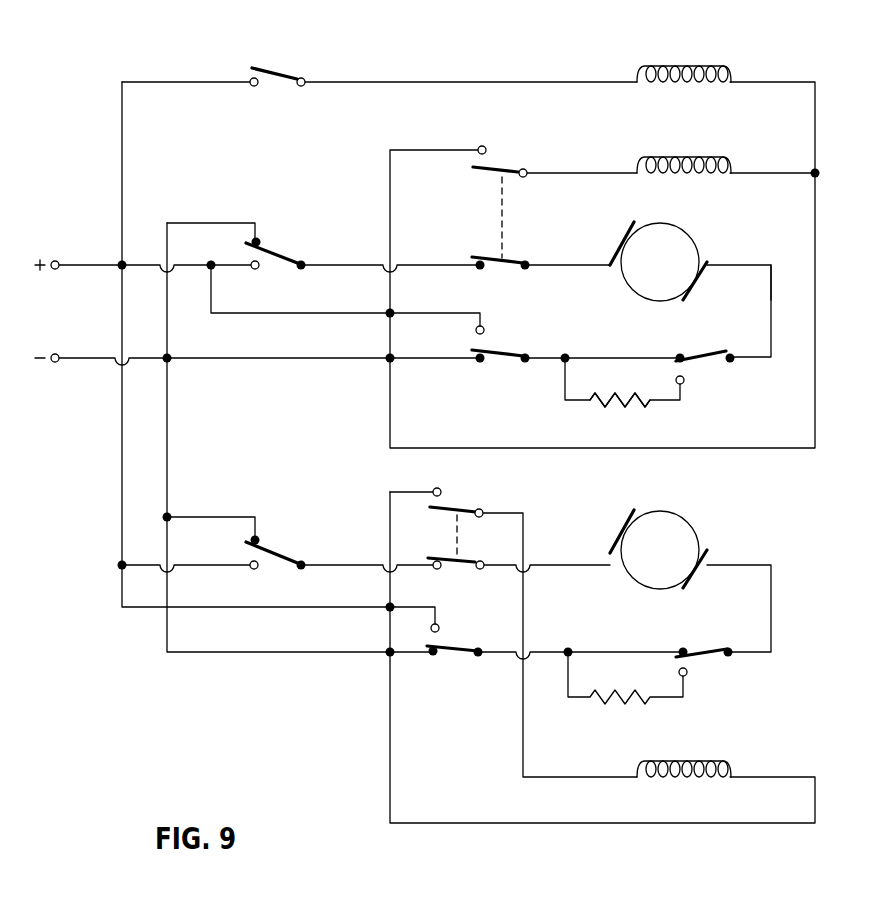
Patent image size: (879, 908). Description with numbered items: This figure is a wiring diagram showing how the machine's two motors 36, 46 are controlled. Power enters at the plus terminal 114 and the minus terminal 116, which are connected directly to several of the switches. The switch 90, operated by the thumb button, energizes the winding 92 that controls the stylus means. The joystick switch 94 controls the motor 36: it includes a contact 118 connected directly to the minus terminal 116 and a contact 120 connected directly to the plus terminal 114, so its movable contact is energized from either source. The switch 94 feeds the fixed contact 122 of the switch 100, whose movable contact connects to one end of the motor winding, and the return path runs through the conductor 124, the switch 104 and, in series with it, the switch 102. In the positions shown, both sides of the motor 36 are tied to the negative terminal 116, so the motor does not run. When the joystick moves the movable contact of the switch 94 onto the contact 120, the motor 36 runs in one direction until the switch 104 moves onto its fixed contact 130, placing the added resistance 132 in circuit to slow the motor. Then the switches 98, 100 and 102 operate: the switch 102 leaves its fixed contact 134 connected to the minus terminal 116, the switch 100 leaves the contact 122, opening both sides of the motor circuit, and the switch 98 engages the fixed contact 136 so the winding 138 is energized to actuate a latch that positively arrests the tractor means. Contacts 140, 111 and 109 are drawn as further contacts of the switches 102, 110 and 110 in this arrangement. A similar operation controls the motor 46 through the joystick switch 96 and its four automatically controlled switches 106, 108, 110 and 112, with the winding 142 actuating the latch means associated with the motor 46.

The plus terminal 114 is at (57, 262).
The minus terminal 116 is at (57, 354).
The switch 90 is at (270, 72).
The winding 92 is at (664, 62).
The winding 138 is at (680, 156).
The fixed contact 136 is at (482, 146).
The switch 98 is at (500, 167).
The switch 100 is at (508, 259).
The fixed contact 122 is at (480, 270).
The contact 140 is at (484, 330).
The switch 102 is at (505, 350).
The fixed contact 134 is at (479, 363).
The switch 104 is at (705, 355).
The fixed contact 130 is at (685, 380).
The added resistance 132 is at (628, 405).
The motor 36 is at (675, 258).
The conductor 124 is at (771, 272).
The contact 118 is at (259, 239).
The switch 94 is at (282, 252).
The contact 120 is at (258, 268).
The switch 96 is at (276, 548).
The switch 106 is at (448, 505).
The switch 108 is at (462, 567).
The contact 111 is at (439, 628).
The switch 110 is at (462, 646).
The contact 109 is at (436, 656).
The switch 112 is at (698, 648).
The motor 46 is at (675, 546).
The winding 142 is at (695, 762).